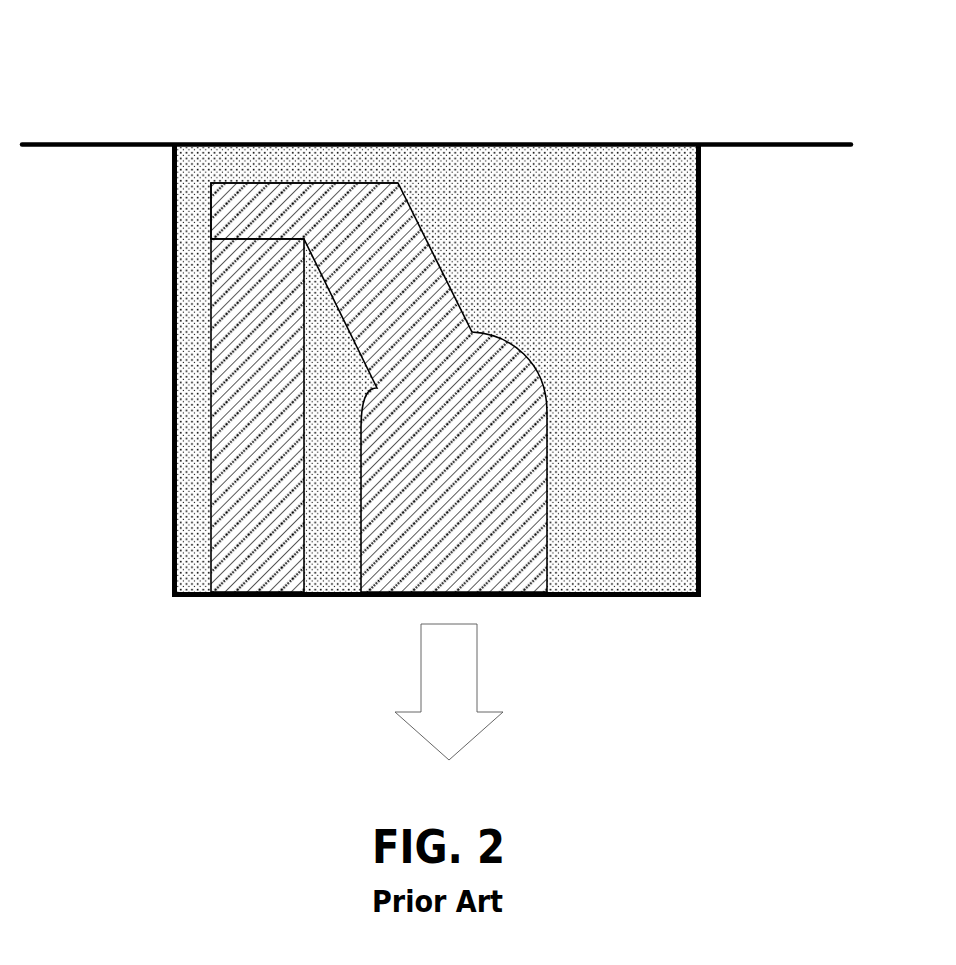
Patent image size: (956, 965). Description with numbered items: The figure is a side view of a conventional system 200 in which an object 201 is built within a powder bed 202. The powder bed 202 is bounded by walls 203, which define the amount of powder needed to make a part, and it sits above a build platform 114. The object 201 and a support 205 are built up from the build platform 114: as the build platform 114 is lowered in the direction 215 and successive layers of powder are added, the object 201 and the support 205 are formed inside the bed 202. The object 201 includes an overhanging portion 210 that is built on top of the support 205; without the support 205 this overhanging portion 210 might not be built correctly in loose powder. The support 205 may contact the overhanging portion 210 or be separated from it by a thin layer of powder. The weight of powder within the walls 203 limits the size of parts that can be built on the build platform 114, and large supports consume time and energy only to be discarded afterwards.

The conventional system 200 is at (154, 66).
The object 201 is at (368, 180).
The powder bed 202 is at (650, 377).
The walls 203 is at (172, 360).
The support 205 is at (258, 597).
The overhanging portion 210 is at (239, 182).
The direction 215 is at (478, 678).
The build platform 114 is at (653, 597).